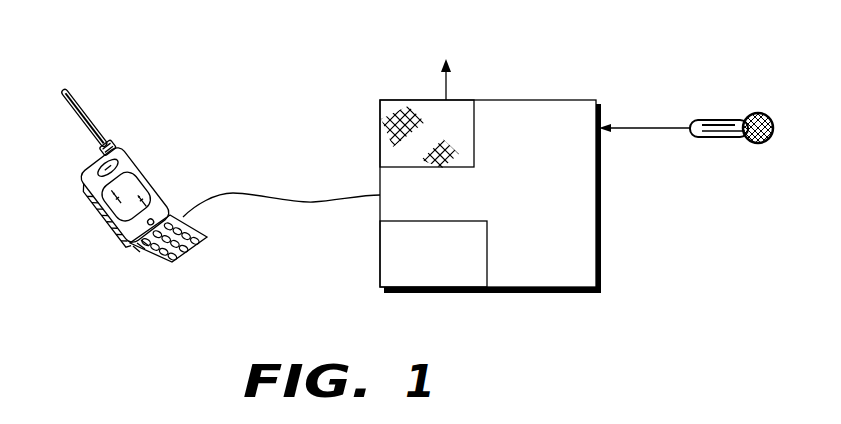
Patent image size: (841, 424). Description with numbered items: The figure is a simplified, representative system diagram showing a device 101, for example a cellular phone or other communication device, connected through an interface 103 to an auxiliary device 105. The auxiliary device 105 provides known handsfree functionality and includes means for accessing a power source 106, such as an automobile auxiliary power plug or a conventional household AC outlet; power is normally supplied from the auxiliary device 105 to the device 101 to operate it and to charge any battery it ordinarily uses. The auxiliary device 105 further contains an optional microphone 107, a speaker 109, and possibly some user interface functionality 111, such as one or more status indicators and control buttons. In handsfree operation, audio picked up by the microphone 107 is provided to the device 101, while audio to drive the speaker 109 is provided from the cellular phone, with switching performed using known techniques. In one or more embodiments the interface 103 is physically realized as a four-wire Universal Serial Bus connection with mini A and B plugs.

The device 101 is at (140, 168).
The interface 103 is at (288, 198).
The auxiliary device 105 is at (552, 100).
The power source 106 is at (478, 45).
The microphone 107 is at (762, 115).
The speaker 109 is at (474, 139).
The user interface functionality 111 is at (487, 247).